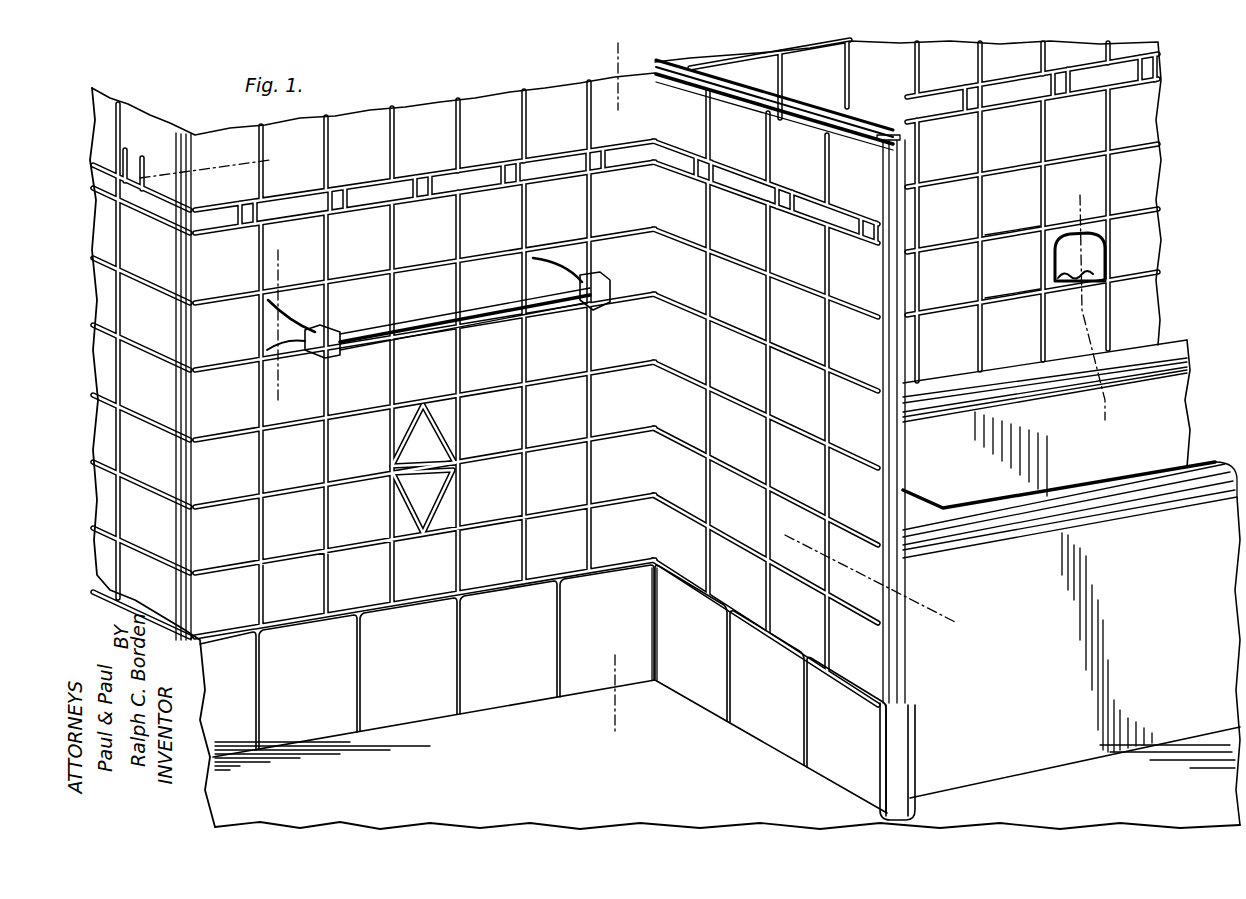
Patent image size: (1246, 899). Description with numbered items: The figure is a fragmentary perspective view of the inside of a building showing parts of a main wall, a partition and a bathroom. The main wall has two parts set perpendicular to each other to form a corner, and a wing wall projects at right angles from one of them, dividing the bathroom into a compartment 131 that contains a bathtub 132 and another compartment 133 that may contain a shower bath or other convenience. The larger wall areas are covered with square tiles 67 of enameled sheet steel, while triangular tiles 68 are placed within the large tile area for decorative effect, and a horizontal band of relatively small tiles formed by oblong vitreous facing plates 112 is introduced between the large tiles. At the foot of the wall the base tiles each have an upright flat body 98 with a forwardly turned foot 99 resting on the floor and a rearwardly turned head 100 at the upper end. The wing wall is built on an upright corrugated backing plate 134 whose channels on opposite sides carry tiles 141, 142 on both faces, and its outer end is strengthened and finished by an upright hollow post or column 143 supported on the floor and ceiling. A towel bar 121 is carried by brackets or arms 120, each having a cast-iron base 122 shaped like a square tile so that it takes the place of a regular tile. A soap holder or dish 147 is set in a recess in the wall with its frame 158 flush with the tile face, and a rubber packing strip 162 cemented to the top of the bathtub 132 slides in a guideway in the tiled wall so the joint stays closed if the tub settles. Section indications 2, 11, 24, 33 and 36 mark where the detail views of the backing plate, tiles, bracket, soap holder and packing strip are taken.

The section line 2- 2 is at (609, 716).
The section line 11- 11 is at (268, 166).
The section line 24- 24 is at (270, 395).
The section line 33- 33 is at (1095, 412).
The section line 36- 36 is at (943, 607).
The square tile 67 is at (625, 338).
The triangular tile 68 is at (424, 200).
The upright flat body 98 is at (543, 688).
The forwardly turned foot 99 is at (516, 696).
The rearwardly turned head 100 is at (695, 592).
The oblong facing plate 112 is at (555, 172).
The bracket or arm 120 is at (325, 291).
The towel bar 121 is at (483, 317).
The bracket base 122 is at (265, 310).
The compartment 131 is at (1075, 762).
The bathtub 132 is at (1071, 643).
The compartment 133 is at (441, 774).
The upright corrugated backing plate 134 is at (810, 92).
The tile 141 is at (822, 105).
The tile 142 is at (765, 398).
The upright post or column 143 is at (905, 678).
The soap holder or dish 147 is at (1093, 253).
The frame 158 is at (1050, 238).
The packing strip 162 is at (963, 370).